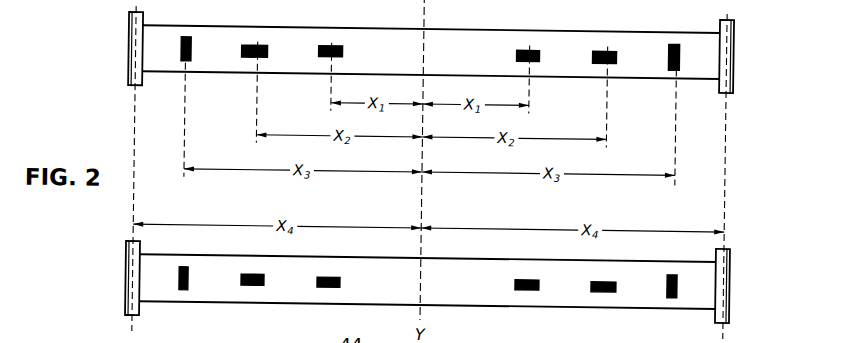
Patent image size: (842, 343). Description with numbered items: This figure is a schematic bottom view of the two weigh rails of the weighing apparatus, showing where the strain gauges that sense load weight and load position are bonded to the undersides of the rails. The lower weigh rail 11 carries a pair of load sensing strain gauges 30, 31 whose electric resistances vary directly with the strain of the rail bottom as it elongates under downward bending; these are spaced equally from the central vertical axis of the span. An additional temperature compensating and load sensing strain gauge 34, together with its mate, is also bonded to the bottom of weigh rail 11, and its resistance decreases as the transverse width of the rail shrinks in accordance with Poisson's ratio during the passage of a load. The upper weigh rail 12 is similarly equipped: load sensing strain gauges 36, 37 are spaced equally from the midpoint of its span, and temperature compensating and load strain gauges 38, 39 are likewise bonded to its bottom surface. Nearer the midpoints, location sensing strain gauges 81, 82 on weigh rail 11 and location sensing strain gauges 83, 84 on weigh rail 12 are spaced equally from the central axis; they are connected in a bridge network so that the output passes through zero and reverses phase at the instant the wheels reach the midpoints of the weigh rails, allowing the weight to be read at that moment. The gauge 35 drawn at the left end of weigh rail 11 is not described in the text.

The weigh rail 11 is at (292, 306).
The weigh rail 12 is at (260, 28).
The load sensing strain gauge 30 is at (252, 288).
The load sensing strain gauge 31 is at (599, 290).
The temperature compensating and load sensing strain gauge 34 is at (665, 295).
The end marker on first bar 35 is at (180, 293).
The load sensing strain gauge 36 is at (249, 60).
The load sensing strain gauge 37 is at (596, 61).
The temperature compensating and load strain gauge 38 is at (179, 62).
The temperature compensating and load strain gauge 39 is at (671, 68).
The location sensing strain gauge 81 is at (330, 278).
The location sensing strain gauge 82 is at (521, 279).
The location sensing strain gauge 83 is at (336, 46).
The location sensing strain gauge 84 is at (535, 49).